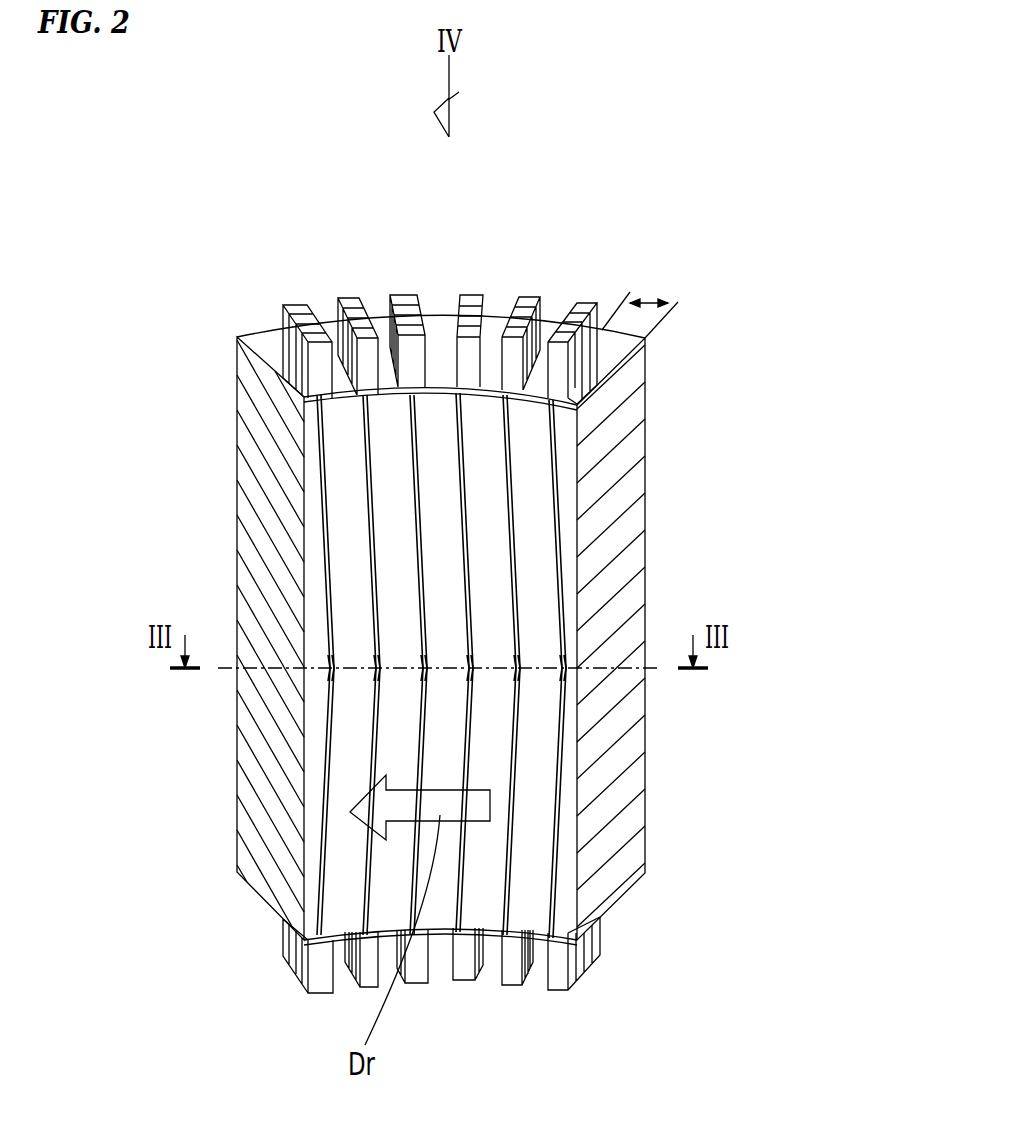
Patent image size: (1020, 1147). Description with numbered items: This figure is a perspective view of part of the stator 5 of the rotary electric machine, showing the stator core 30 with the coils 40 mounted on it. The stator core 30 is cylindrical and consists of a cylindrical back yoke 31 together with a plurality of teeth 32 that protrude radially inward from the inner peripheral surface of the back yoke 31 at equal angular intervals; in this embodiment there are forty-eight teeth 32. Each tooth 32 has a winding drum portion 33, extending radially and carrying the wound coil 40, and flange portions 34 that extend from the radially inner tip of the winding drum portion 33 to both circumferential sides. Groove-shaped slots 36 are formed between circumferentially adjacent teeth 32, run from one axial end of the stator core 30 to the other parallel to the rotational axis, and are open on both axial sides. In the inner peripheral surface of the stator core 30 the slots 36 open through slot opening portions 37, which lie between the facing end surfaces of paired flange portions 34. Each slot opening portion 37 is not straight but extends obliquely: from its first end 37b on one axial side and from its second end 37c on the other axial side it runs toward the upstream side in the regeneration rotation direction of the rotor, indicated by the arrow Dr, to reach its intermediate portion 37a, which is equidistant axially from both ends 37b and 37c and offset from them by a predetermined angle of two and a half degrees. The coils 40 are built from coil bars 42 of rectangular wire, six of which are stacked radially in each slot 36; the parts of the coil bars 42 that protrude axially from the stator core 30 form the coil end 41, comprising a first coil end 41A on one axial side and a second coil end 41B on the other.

The stator 5 is at (692, 270).
The stator core 30 is at (648, 398).
The back yoke 31 is at (615, 342).
The teeth 32 is at (128, 424).
The winding drum portion 33 is at (296, 383).
The flange portions 34 is at (325, 405).
The slots 36 is at (585, 375).
The slot opening portions 37 is at (320, 586).
The intermediate portions 37a is at (568, 688).
The first ends 37b is at (548, 415).
The second ends 37c is at (572, 950).
The coils 40 is at (474, 292).
The coil end 41 is at (442, 621).
The first coil end 41A is at (407, 295).
The second coil end 41B is at (512, 988).
The coil bars 42 is at (353, 295).